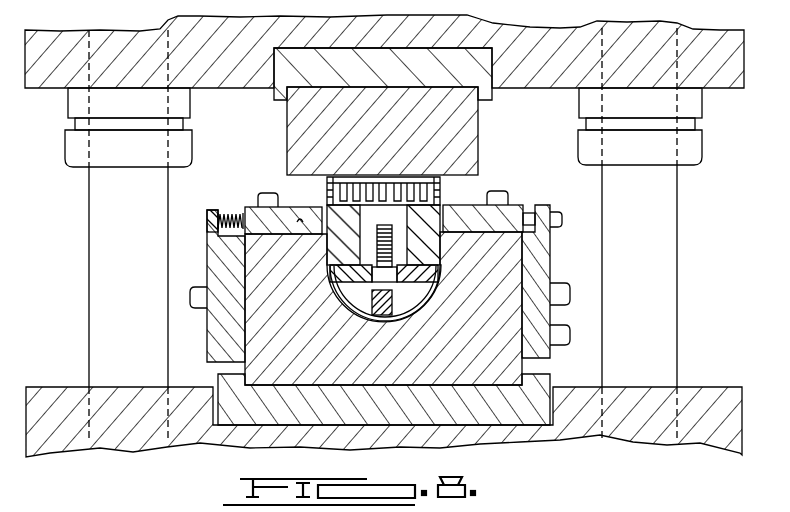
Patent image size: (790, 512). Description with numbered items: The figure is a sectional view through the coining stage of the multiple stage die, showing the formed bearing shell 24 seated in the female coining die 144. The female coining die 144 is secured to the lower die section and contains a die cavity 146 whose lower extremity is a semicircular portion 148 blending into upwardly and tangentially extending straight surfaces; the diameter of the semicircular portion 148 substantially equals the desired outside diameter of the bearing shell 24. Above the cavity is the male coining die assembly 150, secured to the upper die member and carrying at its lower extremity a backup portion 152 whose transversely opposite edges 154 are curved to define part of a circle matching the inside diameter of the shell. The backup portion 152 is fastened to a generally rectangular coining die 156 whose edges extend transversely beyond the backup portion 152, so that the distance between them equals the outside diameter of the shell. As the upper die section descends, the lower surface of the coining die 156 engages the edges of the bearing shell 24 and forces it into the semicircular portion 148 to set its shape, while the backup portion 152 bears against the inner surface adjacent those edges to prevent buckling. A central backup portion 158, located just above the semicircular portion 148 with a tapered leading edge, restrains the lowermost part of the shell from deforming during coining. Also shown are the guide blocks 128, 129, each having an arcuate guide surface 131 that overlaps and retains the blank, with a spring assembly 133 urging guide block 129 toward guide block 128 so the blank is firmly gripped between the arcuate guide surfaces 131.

The male coining die assembly 150 is at (482, 121).
The coining die 156 is at (447, 201).
The arcuate guide surface 131 is at (307, 199).
The guide block 128 is at (522, 203).
The guide block 129 is at (248, 207).
The spring assembly 133 is at (222, 210).
The die cavity 146 is at (318, 258).
The female coining die 144 is at (520, 253).
The transversely opposite edges of backup portion 154 is at (438, 272).
The backup portion 152 is at (427, 292).
The semicircular portion 148 is at (428, 320).
The central backup portion 158 is at (352, 308).
The bearing shell 24 is at (385, 314).